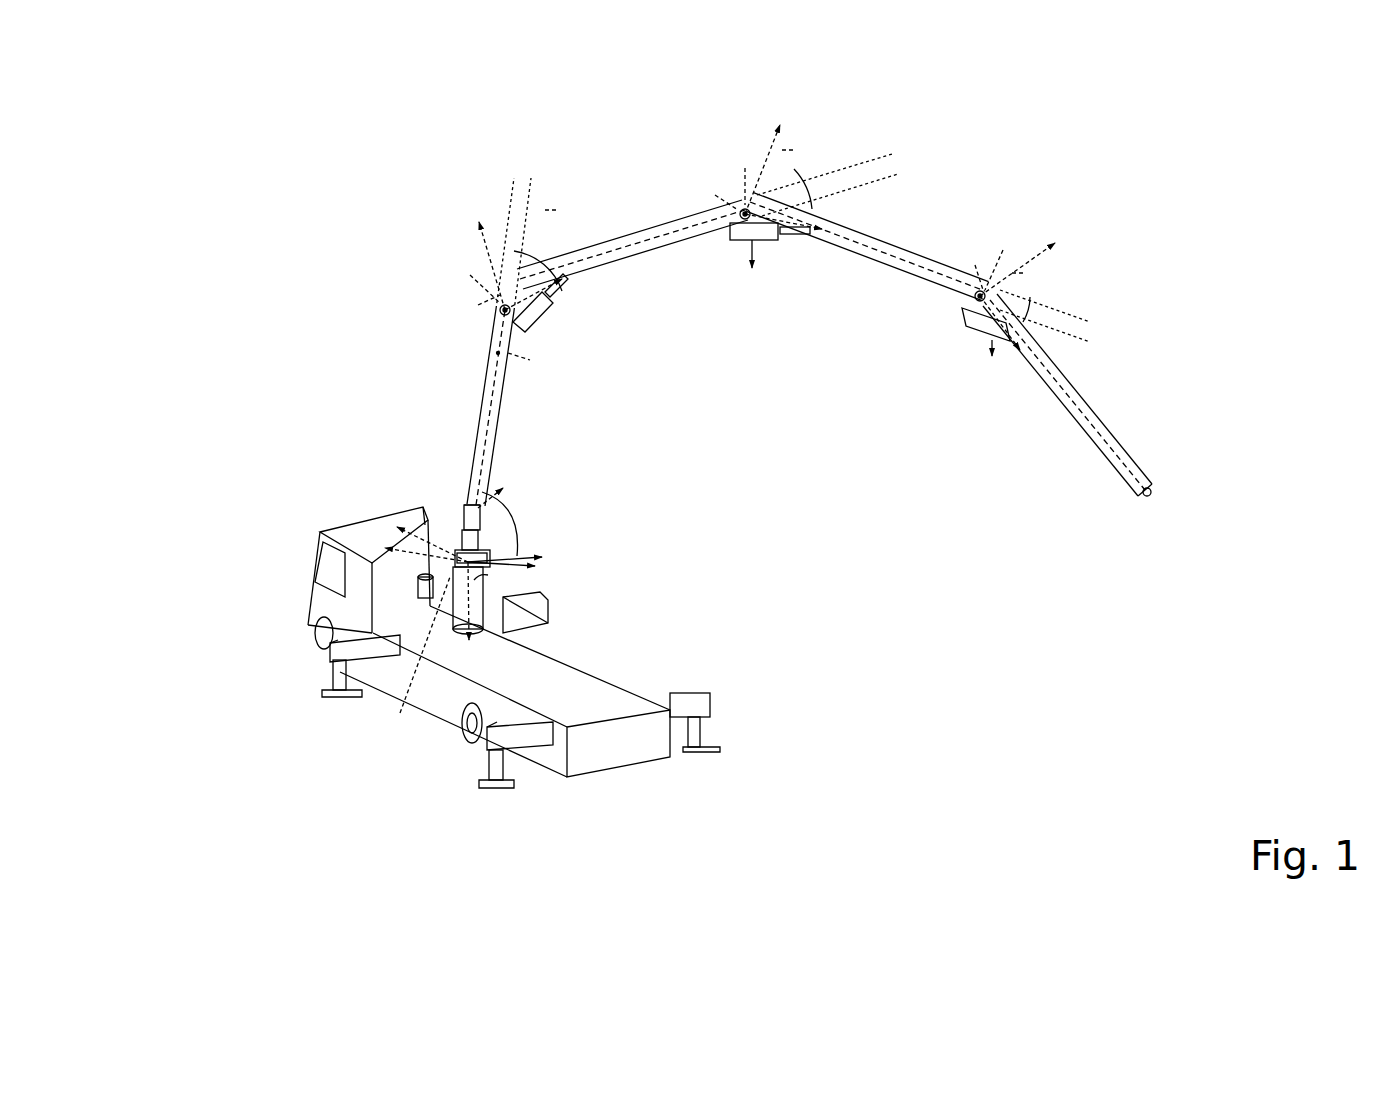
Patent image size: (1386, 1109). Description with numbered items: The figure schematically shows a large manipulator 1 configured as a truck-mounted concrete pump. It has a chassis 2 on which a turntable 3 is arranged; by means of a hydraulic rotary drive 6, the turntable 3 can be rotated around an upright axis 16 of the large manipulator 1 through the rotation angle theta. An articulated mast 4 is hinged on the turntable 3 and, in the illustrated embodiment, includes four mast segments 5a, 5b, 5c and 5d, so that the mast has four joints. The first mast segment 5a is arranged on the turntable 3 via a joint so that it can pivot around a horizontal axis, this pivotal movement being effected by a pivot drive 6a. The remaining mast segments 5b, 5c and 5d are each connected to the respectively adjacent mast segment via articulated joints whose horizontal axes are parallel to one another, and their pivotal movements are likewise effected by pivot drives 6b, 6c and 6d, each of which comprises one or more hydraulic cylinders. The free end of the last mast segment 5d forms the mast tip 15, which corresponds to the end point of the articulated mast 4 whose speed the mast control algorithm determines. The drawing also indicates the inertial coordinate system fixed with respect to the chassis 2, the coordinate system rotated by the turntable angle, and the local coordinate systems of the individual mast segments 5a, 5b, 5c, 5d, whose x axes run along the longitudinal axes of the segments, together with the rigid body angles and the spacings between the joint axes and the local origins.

The large manipulator 1 is at (290, 308).
The chassis 2 is at (643, 730).
The turntable 3 is at (455, 580).
The articulated mast 4 is at (405, 217).
The first mast segment 5a is at (485, 413).
The second mast segment 5b is at (646, 232).
The third mast segment 5c is at (890, 245).
The fourth mast segment 5d is at (1071, 385).
The hydraulic rotary drive 6 is at (417, 602).
The pivot drive 6a is at (475, 565).
The pivot drive 6b is at (530, 292).
The pivot drive 6c is at (751, 218).
The pivot drive 6d is at (992, 308).
The mast tip 15 is at (1150, 503).
The upright axis 16 is at (478, 500).